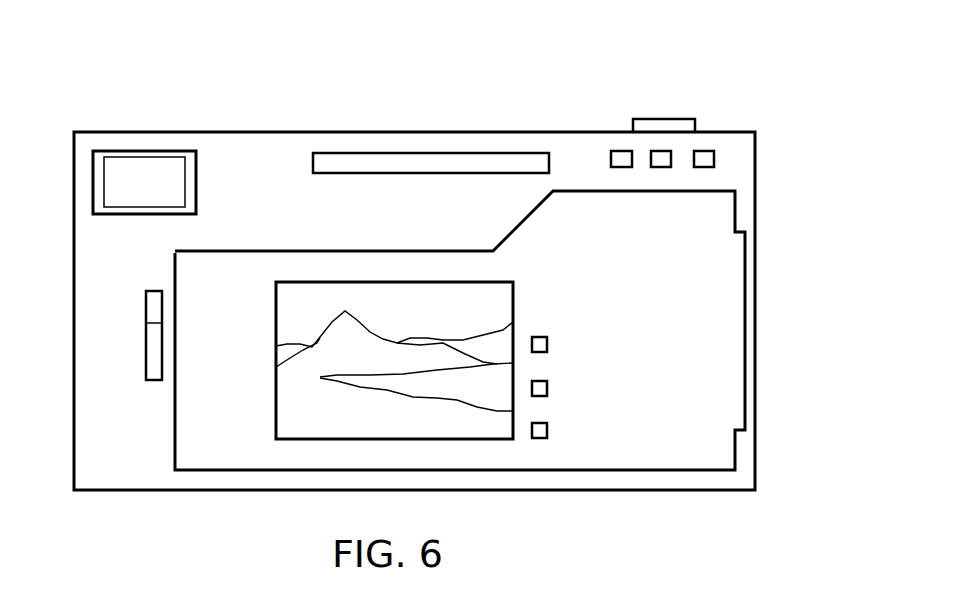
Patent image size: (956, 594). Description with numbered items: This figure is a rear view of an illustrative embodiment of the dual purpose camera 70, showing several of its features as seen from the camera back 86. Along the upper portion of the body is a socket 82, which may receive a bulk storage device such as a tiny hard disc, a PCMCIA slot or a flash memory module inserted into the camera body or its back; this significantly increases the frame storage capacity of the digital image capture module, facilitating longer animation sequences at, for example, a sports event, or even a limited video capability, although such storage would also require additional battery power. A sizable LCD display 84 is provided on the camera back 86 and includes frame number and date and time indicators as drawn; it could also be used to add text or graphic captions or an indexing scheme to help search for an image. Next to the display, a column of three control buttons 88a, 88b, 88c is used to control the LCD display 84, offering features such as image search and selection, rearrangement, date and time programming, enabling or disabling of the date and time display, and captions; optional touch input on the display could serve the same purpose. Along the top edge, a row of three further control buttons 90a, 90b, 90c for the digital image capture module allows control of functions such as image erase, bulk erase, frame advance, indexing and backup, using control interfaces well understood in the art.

The dual purpose camera 70 is at (818, 95).
The socket 82 is at (513, 160).
The LCD display 84 is at (517, 302).
The camera back 86 is at (737, 324).
The control button 88a is at (547, 347).
The control button 88b is at (547, 390).
The control button 88c is at (547, 432).
The control button 90a is at (618, 150).
The control button 90b is at (662, 155).
The control button 90c is at (705, 158).